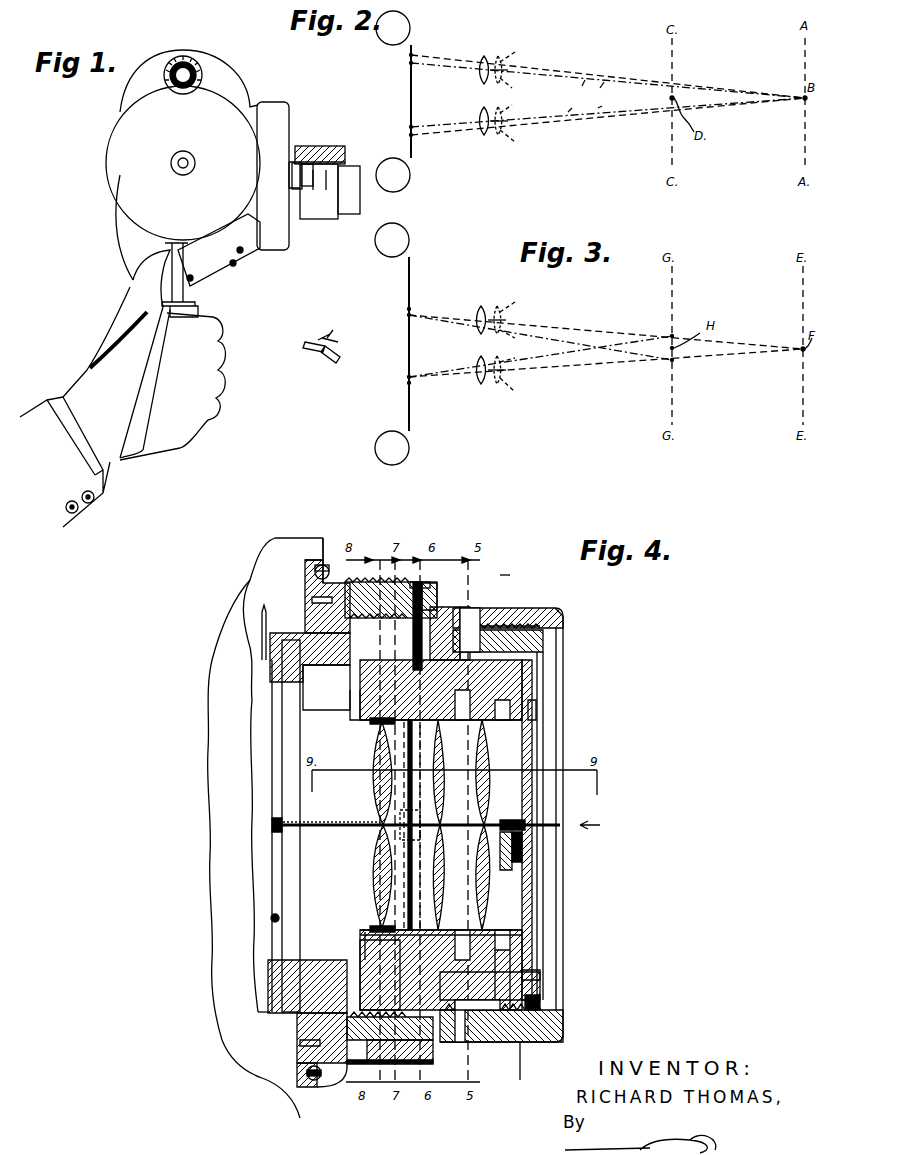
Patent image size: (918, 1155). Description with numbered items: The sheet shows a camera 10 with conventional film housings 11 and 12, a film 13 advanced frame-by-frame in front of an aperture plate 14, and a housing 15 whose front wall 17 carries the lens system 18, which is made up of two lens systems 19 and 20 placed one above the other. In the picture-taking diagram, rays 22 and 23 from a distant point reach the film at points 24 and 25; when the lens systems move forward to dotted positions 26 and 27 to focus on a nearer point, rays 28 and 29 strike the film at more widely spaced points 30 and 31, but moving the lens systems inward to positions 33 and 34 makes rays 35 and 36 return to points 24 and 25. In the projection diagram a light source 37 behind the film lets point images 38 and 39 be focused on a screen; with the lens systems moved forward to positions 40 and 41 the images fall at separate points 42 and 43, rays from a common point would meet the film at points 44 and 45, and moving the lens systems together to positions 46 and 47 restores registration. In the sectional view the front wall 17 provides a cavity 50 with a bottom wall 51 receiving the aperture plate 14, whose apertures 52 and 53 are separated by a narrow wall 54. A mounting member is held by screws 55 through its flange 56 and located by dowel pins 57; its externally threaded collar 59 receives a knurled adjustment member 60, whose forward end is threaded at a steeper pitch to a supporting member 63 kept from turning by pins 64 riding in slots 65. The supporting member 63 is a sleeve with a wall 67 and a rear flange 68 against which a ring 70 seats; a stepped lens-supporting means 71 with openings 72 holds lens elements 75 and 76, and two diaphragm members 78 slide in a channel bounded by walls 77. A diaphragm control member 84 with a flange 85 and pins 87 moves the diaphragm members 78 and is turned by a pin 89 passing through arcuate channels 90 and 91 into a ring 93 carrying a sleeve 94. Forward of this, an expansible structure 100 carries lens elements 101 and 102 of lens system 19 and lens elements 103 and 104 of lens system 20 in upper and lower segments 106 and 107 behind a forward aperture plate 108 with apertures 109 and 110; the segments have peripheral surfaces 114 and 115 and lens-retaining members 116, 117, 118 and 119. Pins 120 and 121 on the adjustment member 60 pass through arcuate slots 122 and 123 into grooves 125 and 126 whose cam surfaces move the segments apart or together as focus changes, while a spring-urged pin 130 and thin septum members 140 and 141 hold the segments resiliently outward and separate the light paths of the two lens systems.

In FIG. 1, the camera 10 is at (116, 178).
In FIG. 1, the film housing 11 is at (135, 88).
In FIG. 1, the film housing 12 is at (128, 262).
In FIG. 2, the film 13 is at (412, 50).
In FIG. 4, the film 13 is at (264, 625).
In FIG. 4, the aperture plate 14 is at (280, 704).
In FIG. 1, the housing 15 is at (120, 136).
In FIG. 1, the front wall 17 is at (289, 140).
In FIG. 4, the front wall 17 is at (324, 585).
In FIG. 1, the lens system 18 is at (328, 175).
In FIG. 4, the lens system 18 is at (515, 570).
In FIG. 2, the lens system 19 is at (486, 56).
In FIG. 3, the lens system 19 is at (485, 308).
In FIG. 4, the lens system 19 is at (522, 753).
In FIG. 2, the lens system 20 is at (483, 137).
In FIG. 3, the lens system 20 is at (480, 385).
In FIG. 4, the lens system 20 is at (522, 900).
In FIG. 2, the ray 22 is at (636, 86).
In FIG. 2, the ray 23 is at (642, 112).
In FIG. 2, the point 24 is at (409, 65).
In FIG. 2, the point 25 is at (409, 127).
In FIG. 2, the dotted line position 26 is at (515, 52).
In FIG. 2, the dotted line position 27 is at (515, 142).
In FIG. 2, the line 28 is at (600, 88).
In FIG. 2, the line 29 is at (598, 108).
In FIG. 2, the point 30 is at (409, 56).
In FIG. 2, the point 31 is at (409, 136).
In FIG. 2, the dotted line position 33 is at (512, 88).
In FIG. 2, the dotted line position 34 is at (512, 105).
In FIG. 2, the line 35 is at (582, 86).
In FIG. 2, the line 36 is at (568, 112).
In FIG. 3, the light source 37 is at (326, 344).
In FIG. 3, the point image 38 is at (407, 316).
In FIG. 3, the point image 39 is at (407, 378).
In FIG. 3, the dotted line position 40 is at (515, 302).
In FIG. 3, the dotted line position 41 is at (515, 392).
In FIG. 3, the point 42 is at (673, 335).
In FIG. 3, the point 43 is at (673, 361).
In FIG. 3, the point 44 is at (410, 309).
In FIG. 3, the point 45 is at (410, 385).
In FIG. 3, the dotted line position 46 is at (515, 338).
In FIG. 3, the dotted line position 47 is at (515, 358).
In FIG. 4, the cavity 50 is at (250, 1050).
In FIG. 4, the bottom wall 51 is at (265, 678).
In FIG. 4, the aperture 52 is at (272, 730).
In FIG. 4, the aperture 53 is at (270, 918).
In FIG. 4, the narrow wall 54 is at (272, 832).
In FIG. 4, the screws 55 is at (310, 1080).
In FIG. 4, the flange 56 is at (320, 1098).
In FIG. 4, the dowel pins 57 is at (315, 588).
In FIG. 4, the collar 59 is at (345, 1085).
In FIG. 4, the adjustment member 60 is at (548, 1045).
In FIG. 4, the supporting member 63 is at (500, 1044).
In FIG. 4, the pins 64 is at (356, 678).
In FIG. 4, the keyways or slots 65 is at (368, 690).
In FIG. 4, the wall 67 is at (528, 1044).
In FIG. 4, the flange 68 is at (378, 970).
In FIG. 4, the ring 70 is at (365, 950).
In FIG. 4, the lens-supporting means 71 is at (372, 926).
In FIG. 4, the lens-receiving openings 72 is at (375, 738).
In FIG. 1, the lens element 75 is at (297, 185).
In FIG. 4, the lens element 75 is at (376, 790).
In FIG. 4, the lens element 76 is at (376, 852).
In FIG. 4, the upper and lower walls 77 is at (412, 826).
In FIG. 4, the diaphragm members 78 is at (413, 825).
In FIG. 4, the diaphragm control member 84 is at (390, 1038).
In FIG. 4, the rearward extending flange 85 is at (372, 700).
In FIG. 4, the pins 87 is at (410, 815).
In FIG. 4, the pin 89 is at (418, 580).
In FIG. 4, the arcuate channel 90 is at (438, 605).
In FIG. 4, the arcuate channel 91 is at (436, 596).
In FIG. 4, the ring 93 is at (438, 605).
In FIG. 4, the sleeve 94 is at (378, 582).
In FIG. 4, the expansible structure 100 is at (565, 680).
In FIG. 1, the lens element 101 is at (315, 185).
In FIG. 4, the lens element 101 is at (440, 770).
In FIG. 1, the lens element 102 is at (345, 190).
In FIG. 4, the lens element 102 is at (488, 775).
In FIG. 4, the lens element 103 is at (441, 862).
In FIG. 4, the lens element 104 is at (490, 860).
In FIG. 4, the segment 106 is at (545, 660).
In FIG. 4, the segment 107 is at (542, 985).
In FIG. 4, the forward aperture plate 108 is at (534, 702).
In FIG. 4, the aperture 109 is at (540, 710).
In FIG. 4, the aperture 110 is at (530, 925).
In FIG. 4, the peripheral surface 114 is at (545, 648).
In FIG. 4, the peripheral surface 115 is at (542, 1000).
In FIG. 4, the lens-retaining member 116 is at (450, 722).
In FIG. 4, the lens-retaining member 117 is at (506, 722).
In FIG. 4, the lens-retaining member 118 is at (441, 957).
In FIG. 4, the lens-retaining member 119 is at (506, 927).
In FIG. 4, the pin 120 is at (490, 610).
In FIG. 4, the pin 121 is at (460, 1044).
In FIG. 4, the arcuate slot 122 is at (500, 620).
In FIG. 4, the arcuate slot 123 is at (478, 1044).
In FIG. 4, the groove 125 is at (560, 610).
In FIG. 4, the groove 126 is at (535, 965).
In FIG. 4, the pin 130 is at (524, 840).
In FIG. 4, the septum member 140 is at (510, 815).
In FIG. 4, the septum member 141 is at (512, 820).